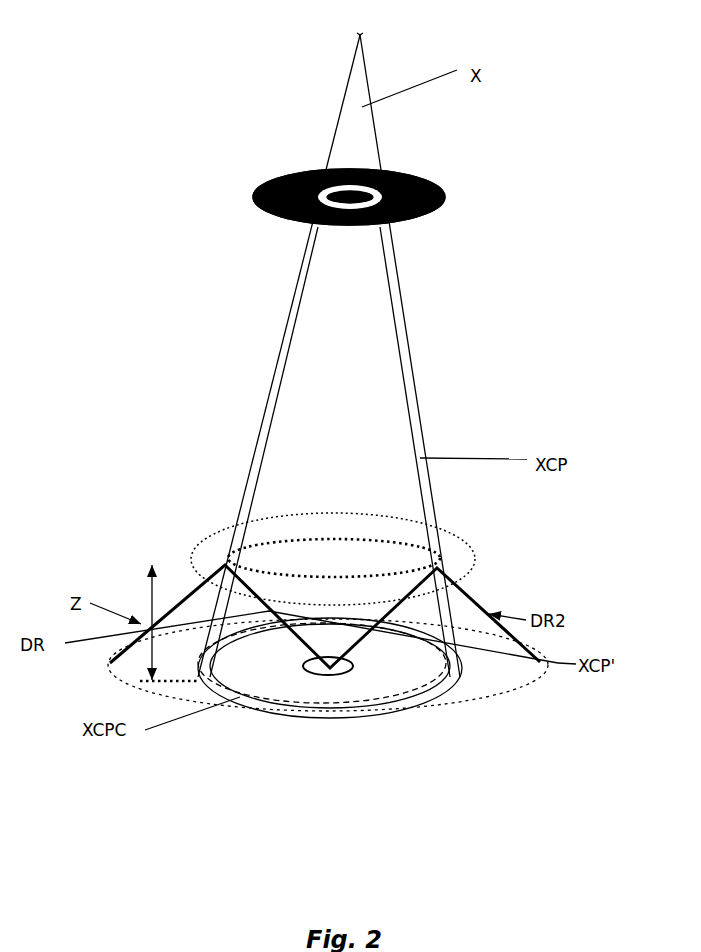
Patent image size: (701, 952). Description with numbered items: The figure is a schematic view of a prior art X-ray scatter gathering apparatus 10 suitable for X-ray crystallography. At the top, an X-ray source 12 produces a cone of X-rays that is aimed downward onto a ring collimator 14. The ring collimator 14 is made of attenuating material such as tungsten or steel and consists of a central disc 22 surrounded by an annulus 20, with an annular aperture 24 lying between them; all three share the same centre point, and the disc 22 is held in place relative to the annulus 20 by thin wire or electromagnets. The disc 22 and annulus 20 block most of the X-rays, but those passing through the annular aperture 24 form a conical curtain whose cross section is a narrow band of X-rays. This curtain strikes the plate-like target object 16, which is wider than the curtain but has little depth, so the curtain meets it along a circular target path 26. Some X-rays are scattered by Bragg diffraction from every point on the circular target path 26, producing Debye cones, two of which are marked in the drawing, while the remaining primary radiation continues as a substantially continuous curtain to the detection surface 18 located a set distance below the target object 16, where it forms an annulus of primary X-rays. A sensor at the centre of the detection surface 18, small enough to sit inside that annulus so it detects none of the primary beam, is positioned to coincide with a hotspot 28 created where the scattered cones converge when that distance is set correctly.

The X-ray scatter gathering apparatus 10 is at (497, 320).
The X-ray source 12 is at (358, 35).
The ring collimator 14 is at (253, 195).
The target object 16 is at (478, 567).
The detection surface 18 is at (468, 685).
The annulus 20 is at (445, 192).
The disc 22 is at (350, 200).
The annular aperture 24 is at (311, 170).
The circular target path 26 is at (285, 543).
The hotspot 28 is at (322, 680).